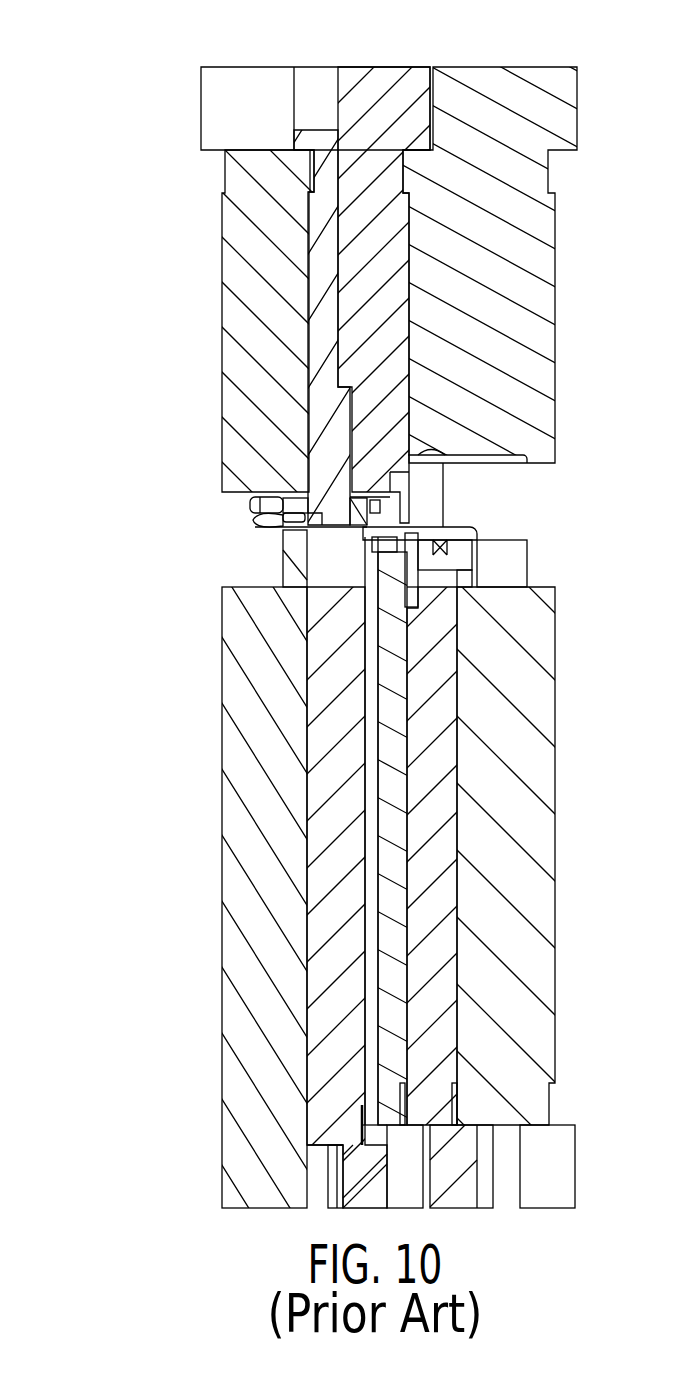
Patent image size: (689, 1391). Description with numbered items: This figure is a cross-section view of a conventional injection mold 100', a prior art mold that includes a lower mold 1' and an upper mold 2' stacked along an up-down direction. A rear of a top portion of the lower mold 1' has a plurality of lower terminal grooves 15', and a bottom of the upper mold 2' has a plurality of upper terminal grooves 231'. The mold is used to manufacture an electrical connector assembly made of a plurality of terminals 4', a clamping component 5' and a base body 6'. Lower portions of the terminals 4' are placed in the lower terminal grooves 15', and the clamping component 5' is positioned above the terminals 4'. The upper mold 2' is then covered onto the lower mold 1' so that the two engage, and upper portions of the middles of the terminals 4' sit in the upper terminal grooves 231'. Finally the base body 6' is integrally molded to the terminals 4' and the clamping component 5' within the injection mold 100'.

The conventional injection mold 100' is at (310, 653).
The lower mold 1' is at (233, 904).
The upper mold 2' is at (245, 325).
The terminals 4' is at (233, 527).
The clamping component 5' is at (245, 499).
The base body 6' is at (267, 454).
The lower terminal grooves 15' is at (256, 352).
The upper terminal grooves 231' is at (224, 475).